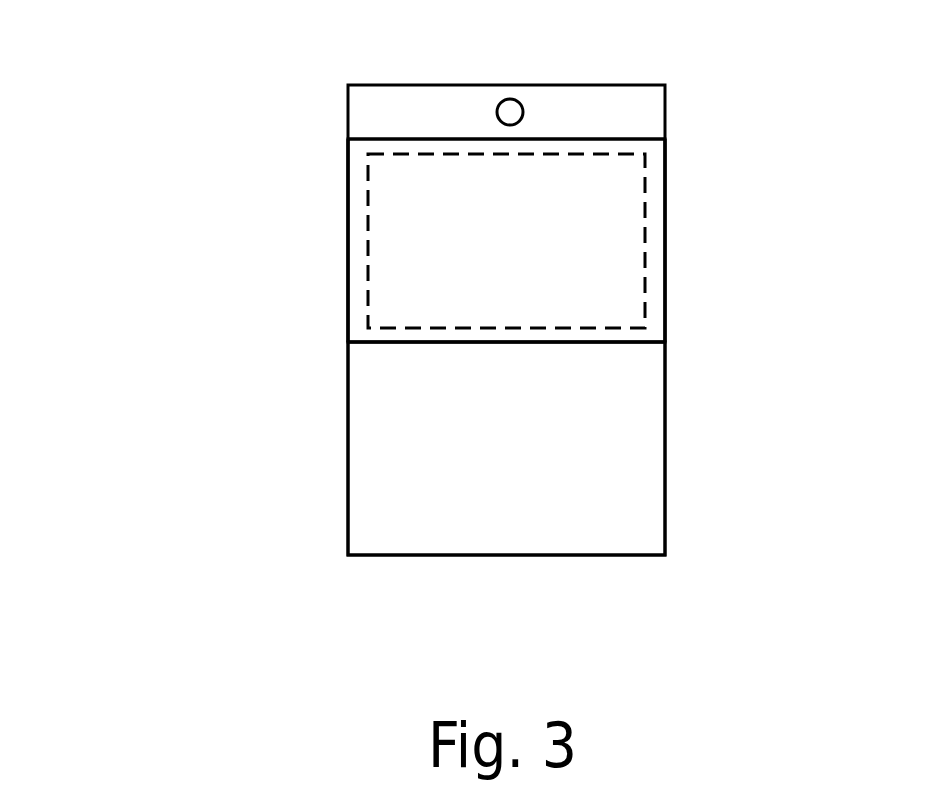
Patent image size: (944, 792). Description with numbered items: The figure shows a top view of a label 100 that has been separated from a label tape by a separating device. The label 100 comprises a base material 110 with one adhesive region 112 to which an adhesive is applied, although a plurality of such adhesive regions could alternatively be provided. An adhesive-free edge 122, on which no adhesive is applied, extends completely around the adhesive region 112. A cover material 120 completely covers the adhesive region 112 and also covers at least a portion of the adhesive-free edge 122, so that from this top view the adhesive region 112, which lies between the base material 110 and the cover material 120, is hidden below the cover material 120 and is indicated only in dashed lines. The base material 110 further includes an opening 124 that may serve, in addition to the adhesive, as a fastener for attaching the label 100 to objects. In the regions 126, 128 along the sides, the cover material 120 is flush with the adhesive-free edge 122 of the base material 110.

The label 100 is at (152, 149).
The base material 110 is at (387, 494).
The adhesive region 112 is at (405, 183).
The cover material 120 is at (357, 317).
The adhesive-free edge 122 is at (590, 135).
The opening 124 is at (510, 110).
The region 126 is at (333, 285).
The region 128 is at (688, 193).